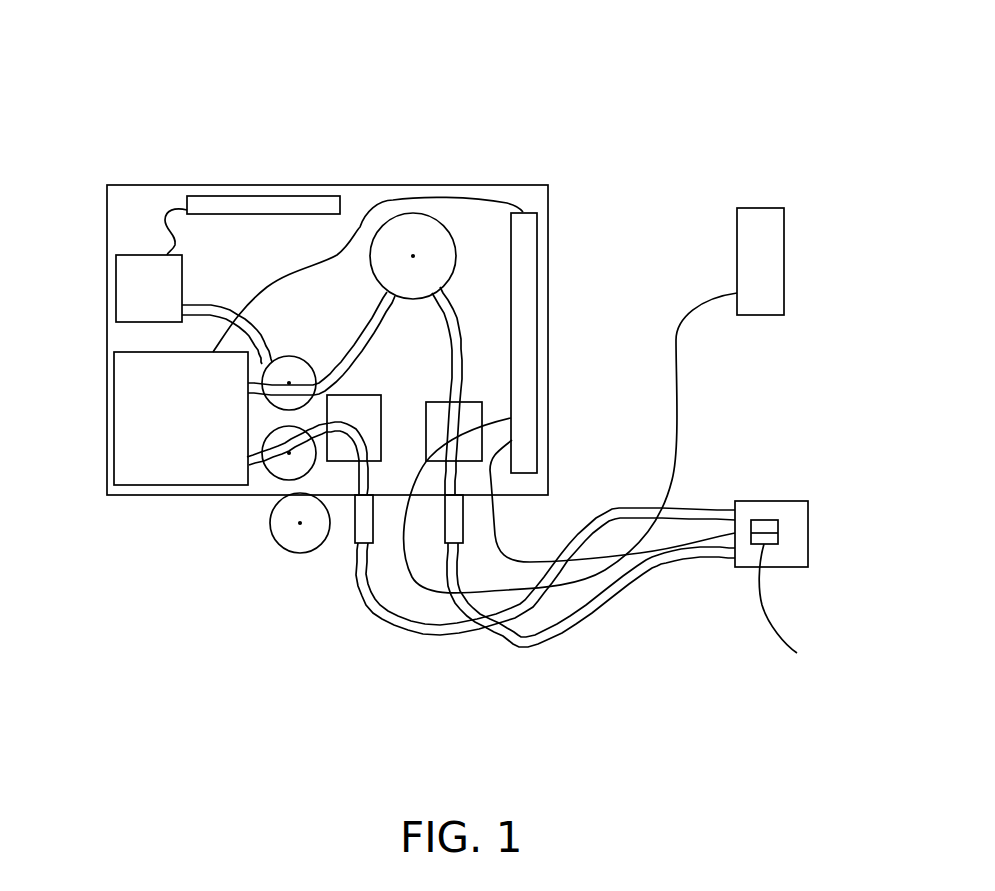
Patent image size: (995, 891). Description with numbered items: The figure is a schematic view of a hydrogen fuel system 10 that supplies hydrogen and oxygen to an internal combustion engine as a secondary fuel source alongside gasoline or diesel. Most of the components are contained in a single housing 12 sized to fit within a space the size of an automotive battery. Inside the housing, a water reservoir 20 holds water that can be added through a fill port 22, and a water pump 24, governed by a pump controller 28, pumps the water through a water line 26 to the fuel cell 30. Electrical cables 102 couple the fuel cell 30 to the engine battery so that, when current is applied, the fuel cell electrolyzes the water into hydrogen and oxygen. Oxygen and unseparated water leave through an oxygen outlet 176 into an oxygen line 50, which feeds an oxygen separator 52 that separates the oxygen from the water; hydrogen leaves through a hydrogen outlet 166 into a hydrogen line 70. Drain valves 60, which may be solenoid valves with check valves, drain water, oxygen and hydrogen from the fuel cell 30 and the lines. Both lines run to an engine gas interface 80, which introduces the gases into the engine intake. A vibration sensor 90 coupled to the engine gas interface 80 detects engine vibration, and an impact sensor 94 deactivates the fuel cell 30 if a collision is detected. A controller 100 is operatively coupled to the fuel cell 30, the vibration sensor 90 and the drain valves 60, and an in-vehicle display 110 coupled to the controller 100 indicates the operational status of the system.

The hydrogen fuel system 10 is at (507, 90).
The housing 12 is at (483, 183).
The water reservoir 20 is at (247, 260).
The fill port 22 is at (297, 553).
The water pump 24 is at (131, 255).
The water line 26 is at (203, 315).
The pump controller 28 is at (262, 196).
The fuel cell 30 is at (153, 495).
The oxygen line 50 is at (360, 350).
The oxygen separator 52 is at (397, 213).
The drain valves 60 is at (297, 355).
The hydrogen line 70 is at (567, 643).
The engine gas interface 80 is at (757, 501).
The vibration sensor 90 is at (790, 608).
The impact sensor 94 is at (772, 518).
The controller 100 is at (538, 240).
The electrical cables 102 is at (360, 227).
The in-vehicle display 110 is at (760, 208).
The hydrogen outlet 166 is at (253, 463).
The oxygen outlet 176 is at (247, 390).